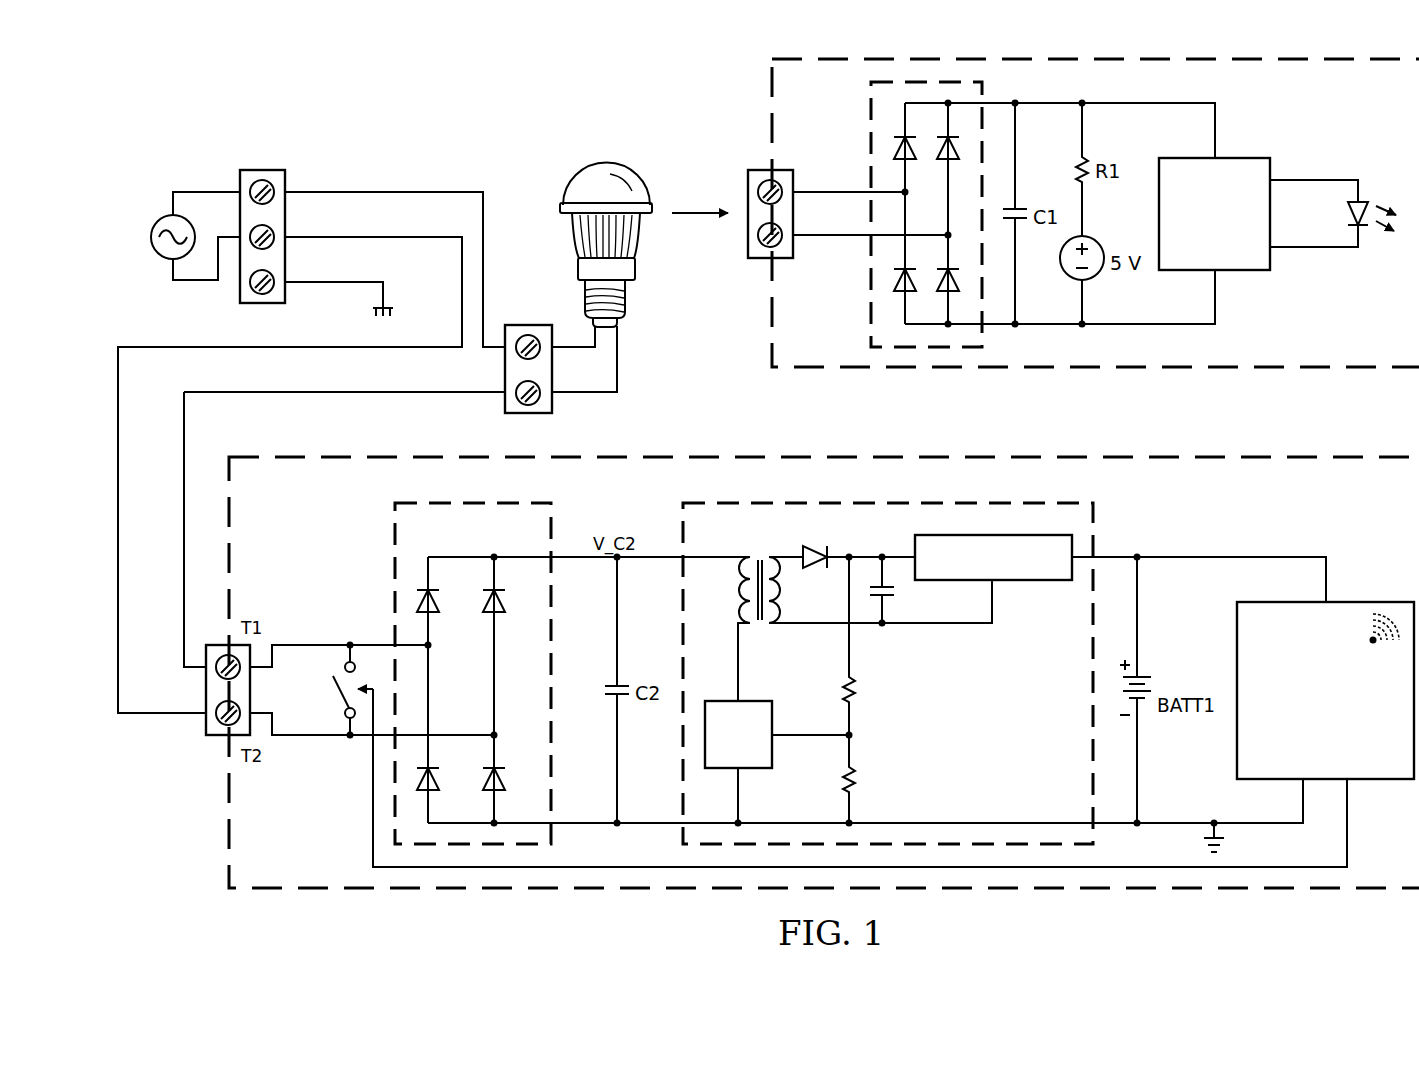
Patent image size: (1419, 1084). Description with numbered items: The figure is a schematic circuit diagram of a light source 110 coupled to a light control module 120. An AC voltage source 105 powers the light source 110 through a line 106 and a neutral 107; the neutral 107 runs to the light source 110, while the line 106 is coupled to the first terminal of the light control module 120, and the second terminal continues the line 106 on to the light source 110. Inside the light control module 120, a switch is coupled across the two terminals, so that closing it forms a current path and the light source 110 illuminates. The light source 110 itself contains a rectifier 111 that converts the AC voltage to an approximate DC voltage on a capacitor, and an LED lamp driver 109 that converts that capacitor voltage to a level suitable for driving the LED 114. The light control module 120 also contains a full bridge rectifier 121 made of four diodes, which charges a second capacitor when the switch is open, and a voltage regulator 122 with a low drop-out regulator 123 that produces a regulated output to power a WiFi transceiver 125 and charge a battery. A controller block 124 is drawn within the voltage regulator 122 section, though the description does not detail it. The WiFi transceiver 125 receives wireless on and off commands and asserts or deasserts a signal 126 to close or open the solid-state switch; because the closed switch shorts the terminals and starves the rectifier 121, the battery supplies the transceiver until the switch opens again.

The AC voltage source 105 is at (160, 214).
The line 106 is at (438, 236).
The neutral 107 is at (417, 190).
The LED lamp driver 109 is at (1237, 157).
The light source 110 is at (594, 164).
The rectifier 111 is at (866, 131).
The LED 114 is at (1350, 210).
The light control module 120 is at (1254, 452).
The rectifier 121 is at (388, 552).
The voltage regulator 122 is at (931, 667).
The low drop-out (LDO) regulator 123 is at (1027, 580).
The controller 124 is at (760, 750).
The WiFi transceiver 125 is at (1358, 602).
The signal 126 is at (373, 800).